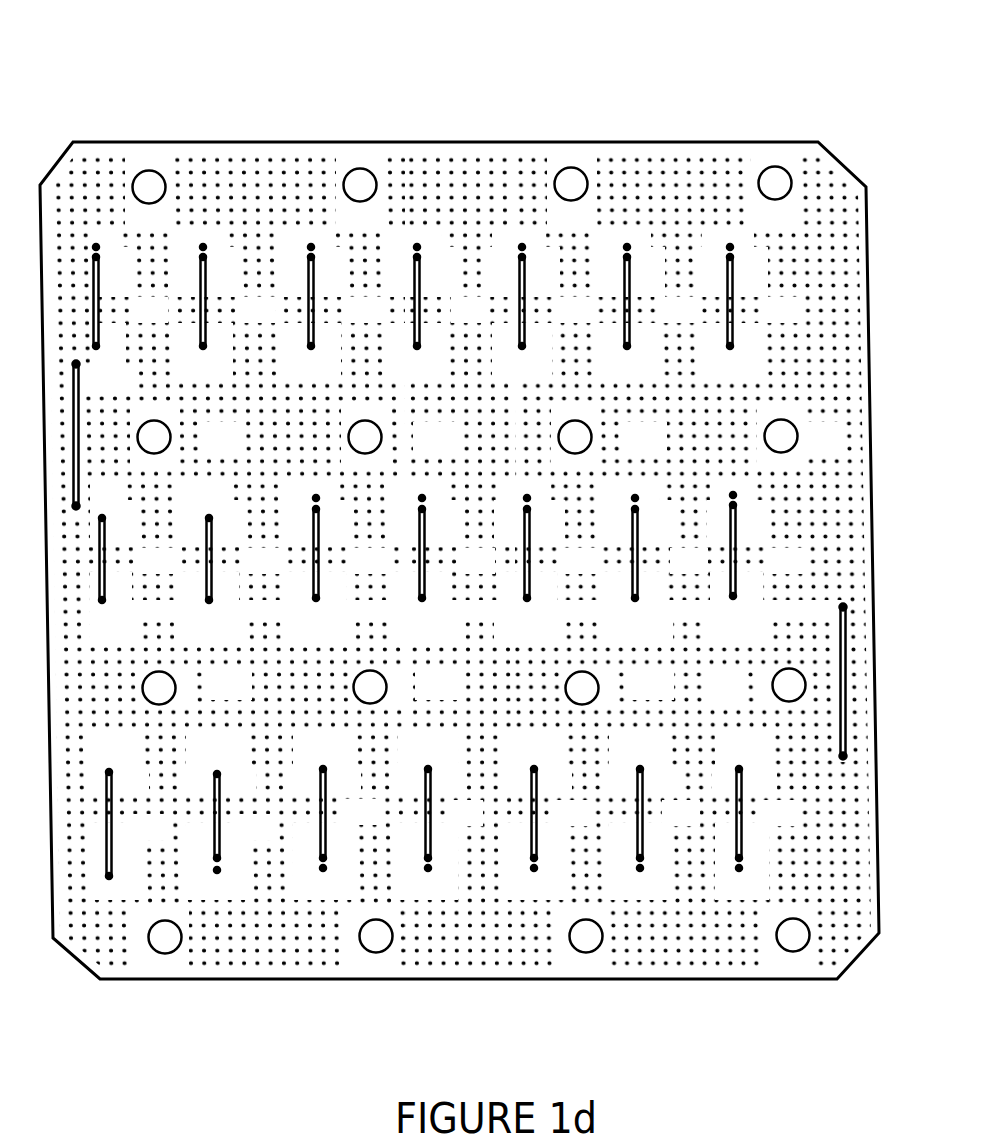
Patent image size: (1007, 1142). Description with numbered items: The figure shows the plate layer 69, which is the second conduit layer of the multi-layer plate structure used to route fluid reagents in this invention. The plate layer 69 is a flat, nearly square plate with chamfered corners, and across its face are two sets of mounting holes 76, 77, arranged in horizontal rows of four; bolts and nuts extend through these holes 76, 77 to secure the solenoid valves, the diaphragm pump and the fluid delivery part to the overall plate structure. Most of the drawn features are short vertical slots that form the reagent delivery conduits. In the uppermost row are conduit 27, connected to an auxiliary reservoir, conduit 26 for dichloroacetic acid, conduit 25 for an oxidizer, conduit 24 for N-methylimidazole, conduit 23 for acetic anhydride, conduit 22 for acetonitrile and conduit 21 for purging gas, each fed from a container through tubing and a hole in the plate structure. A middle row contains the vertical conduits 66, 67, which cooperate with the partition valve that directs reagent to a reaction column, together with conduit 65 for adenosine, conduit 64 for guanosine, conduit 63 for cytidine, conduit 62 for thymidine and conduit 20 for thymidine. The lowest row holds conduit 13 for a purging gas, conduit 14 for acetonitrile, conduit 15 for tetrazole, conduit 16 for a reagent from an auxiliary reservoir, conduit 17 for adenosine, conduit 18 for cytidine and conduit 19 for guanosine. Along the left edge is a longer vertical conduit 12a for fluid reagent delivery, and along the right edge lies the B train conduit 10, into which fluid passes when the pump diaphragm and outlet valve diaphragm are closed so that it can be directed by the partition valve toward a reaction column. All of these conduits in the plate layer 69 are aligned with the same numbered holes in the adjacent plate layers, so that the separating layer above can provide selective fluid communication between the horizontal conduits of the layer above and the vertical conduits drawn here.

The plate layer 69 is at (763, 78).
The holes 76 is at (145, 178).
The holes 77 is at (167, 433).
The B train conduit 10 is at (847, 693).
The vertical conduit 12a is at (80, 396).
The conduit 13 is at (113, 835).
The conduit 14 is at (221, 840).
The conduit 15 is at (327, 811).
The conduit 16 is at (432, 812).
The conduit 17 is at (538, 812).
The conduit 18 is at (644, 815).
The conduit 19 is at (743, 815).
The conduit 20 is at (737, 557).
The conduit 21 is at (734, 308).
The conduit 22 is at (631, 308).
The conduit 23 is at (526, 308).
The conduit 24 is at (421, 308).
The conduit 25 is at (315, 308).
The conduit 26 is at (207, 308).
The conduit 27 is at (100, 308).
The conduit 62 is at (639, 559).
The conduit 63 is at (531, 566).
The conduit 64 is at (426, 559).
The conduit 65 is at (320, 559).
The vertical conduit 66 is at (213, 559).
The vertical conduit 67 is at (106, 559).